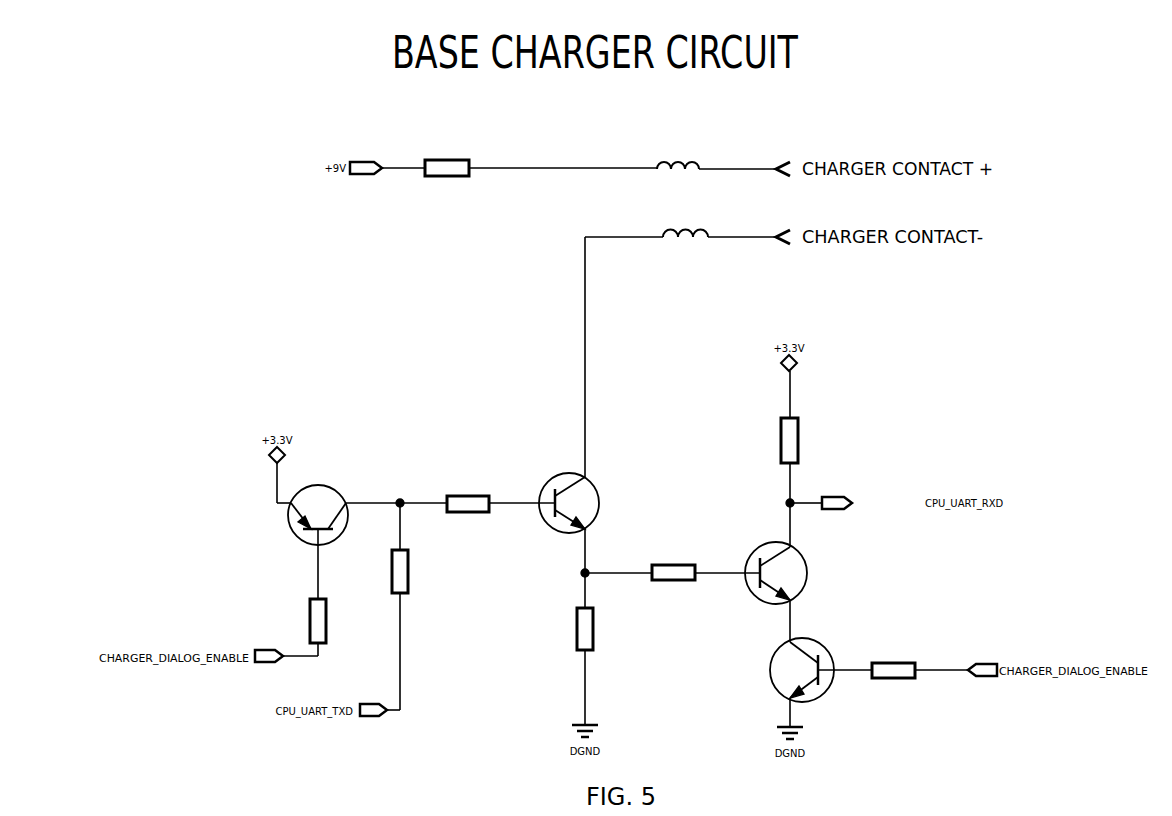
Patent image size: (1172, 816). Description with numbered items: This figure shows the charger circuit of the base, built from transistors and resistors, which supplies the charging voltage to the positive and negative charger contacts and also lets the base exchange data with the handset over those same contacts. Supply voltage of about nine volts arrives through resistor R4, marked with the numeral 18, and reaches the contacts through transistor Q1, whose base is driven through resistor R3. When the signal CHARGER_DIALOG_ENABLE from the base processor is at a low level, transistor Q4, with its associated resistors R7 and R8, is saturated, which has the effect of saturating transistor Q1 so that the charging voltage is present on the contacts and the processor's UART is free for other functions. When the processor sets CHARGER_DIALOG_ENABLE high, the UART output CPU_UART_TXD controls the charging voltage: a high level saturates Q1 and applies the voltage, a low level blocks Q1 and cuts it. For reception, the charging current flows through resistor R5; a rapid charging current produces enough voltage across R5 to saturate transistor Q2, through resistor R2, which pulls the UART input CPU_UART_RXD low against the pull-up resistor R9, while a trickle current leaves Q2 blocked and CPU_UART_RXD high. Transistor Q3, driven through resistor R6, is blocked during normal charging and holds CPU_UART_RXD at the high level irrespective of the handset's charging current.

The resistor R4 18 is at (447, 176).
The resistor R4 is at (447, 158).
The resistor R2 1k R2 is at (673, 575).
The resistor R3 1k R3 is at (468, 504).
The resistor R5 is at (560, 629).
The resistor R6 1k R6 is at (893, 673).
The resistor R7 1k R7 is at (414, 572).
The resistor R8 1k R8 is at (333, 620).
The resistor R9 1k R9 is at (806, 440).
The transistor Q1 is at (585, 503).
The transistor Q2 is at (796, 573).
The transistor Q3 is at (787, 670).
The transistor Q4 is at (318, 504).